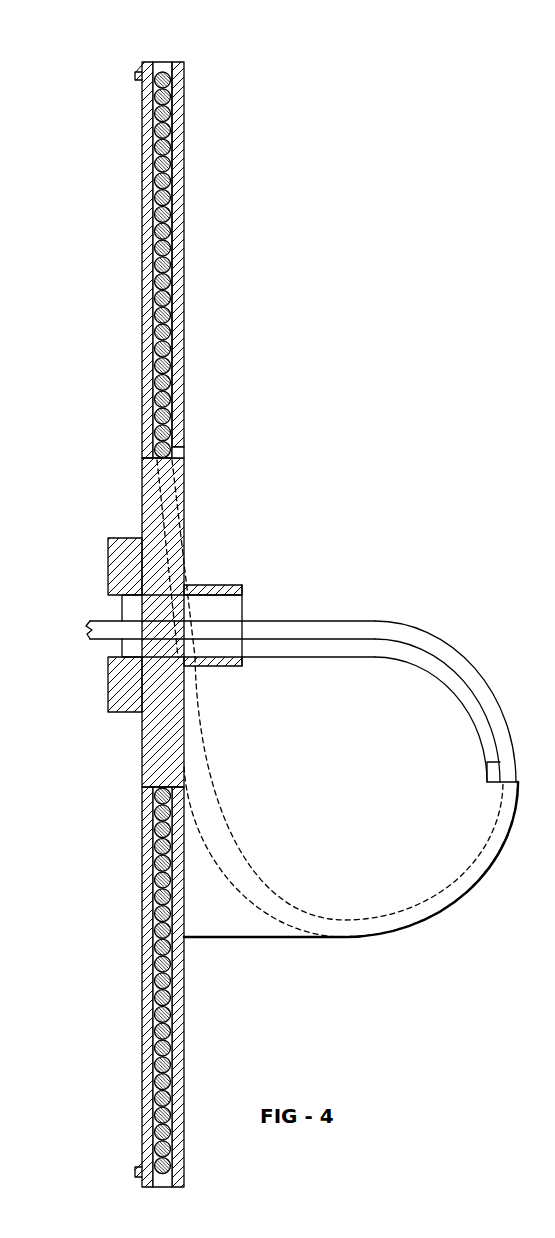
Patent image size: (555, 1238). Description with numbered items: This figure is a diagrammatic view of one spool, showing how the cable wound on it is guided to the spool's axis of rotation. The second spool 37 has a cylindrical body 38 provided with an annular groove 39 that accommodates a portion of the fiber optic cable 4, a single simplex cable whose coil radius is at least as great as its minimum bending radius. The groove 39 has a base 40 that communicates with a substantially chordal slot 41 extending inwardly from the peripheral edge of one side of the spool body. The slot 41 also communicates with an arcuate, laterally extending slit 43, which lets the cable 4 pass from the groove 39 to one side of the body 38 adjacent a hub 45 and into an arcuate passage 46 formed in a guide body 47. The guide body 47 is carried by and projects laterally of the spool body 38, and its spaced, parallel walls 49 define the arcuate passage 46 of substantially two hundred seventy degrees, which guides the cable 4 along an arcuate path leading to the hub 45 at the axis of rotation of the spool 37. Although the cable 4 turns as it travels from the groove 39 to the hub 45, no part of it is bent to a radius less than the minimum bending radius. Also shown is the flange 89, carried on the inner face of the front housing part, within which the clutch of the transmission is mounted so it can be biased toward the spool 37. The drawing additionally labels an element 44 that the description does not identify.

The fiber optic cable 4 is at (184, 78).
The second spool 37 is at (244, 237).
The cylindrical body 38 is at (183, 558).
The annular groove 39 is at (158, 62).
The base 40 is at (160, 462).
The chordal slot 41 is at (554, 870).
The arcuate laterally extending slit 43 is at (170, 603).
The notch 44 is at (178, 452).
The hub 45 is at (225, 667).
The arcuate passage 46 is at (310, 921).
The guide body 47 is at (486, 620).
The spaced parallel walls 49 is at (390, 739).
The flange 89 is at (108, 697).